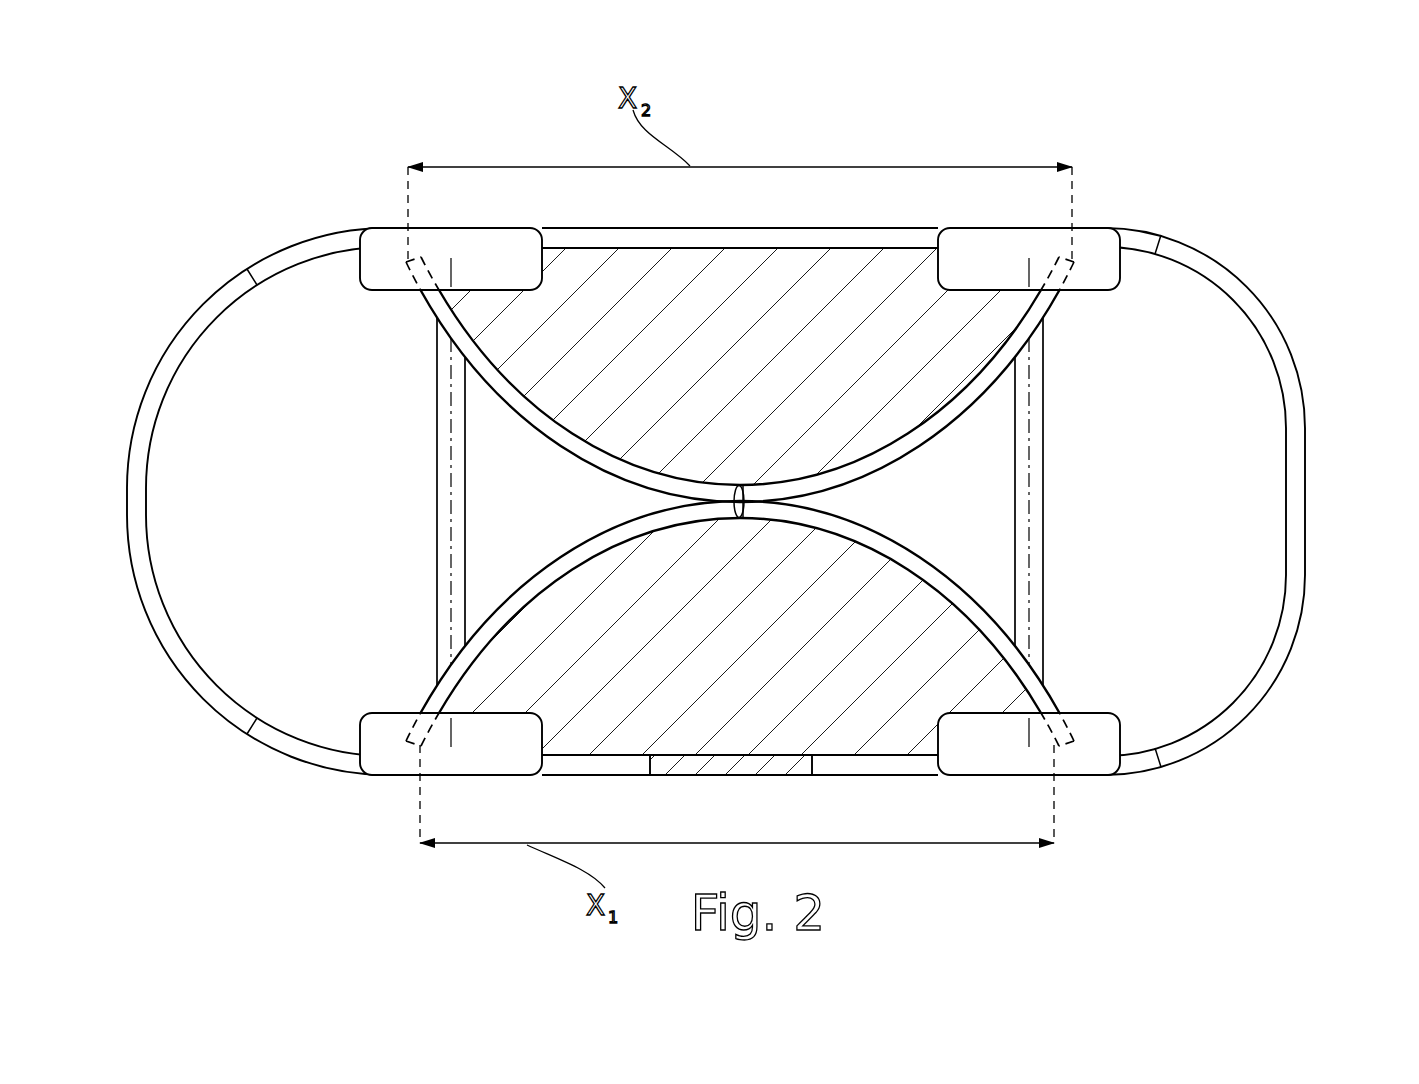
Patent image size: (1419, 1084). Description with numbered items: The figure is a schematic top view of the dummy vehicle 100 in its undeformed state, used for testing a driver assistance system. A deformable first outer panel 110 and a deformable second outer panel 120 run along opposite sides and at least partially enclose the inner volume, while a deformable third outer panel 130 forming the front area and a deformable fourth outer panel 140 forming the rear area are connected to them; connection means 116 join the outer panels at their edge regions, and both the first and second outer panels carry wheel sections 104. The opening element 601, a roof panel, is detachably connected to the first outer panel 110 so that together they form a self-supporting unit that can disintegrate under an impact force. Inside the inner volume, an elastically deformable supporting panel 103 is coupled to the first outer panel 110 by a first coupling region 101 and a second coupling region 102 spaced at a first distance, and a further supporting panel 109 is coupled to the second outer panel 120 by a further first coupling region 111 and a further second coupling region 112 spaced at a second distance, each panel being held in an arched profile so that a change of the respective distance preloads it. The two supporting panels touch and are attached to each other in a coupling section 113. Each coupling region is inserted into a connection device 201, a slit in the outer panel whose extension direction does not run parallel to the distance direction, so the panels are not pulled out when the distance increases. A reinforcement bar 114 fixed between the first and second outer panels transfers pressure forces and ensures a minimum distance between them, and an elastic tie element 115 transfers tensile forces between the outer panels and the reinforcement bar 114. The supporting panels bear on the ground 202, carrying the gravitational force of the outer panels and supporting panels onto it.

The dummy vehicle 100 is at (1194, 125).
The first coupling region 101 is at (406, 720).
The second coupling region 102 is at (1078, 722).
The supporting panel 103 is at (657, 623).
The wheel section 104 is at (464, 267).
The further supporting panel 109 is at (632, 342).
The first outer panel 110 is at (846, 762).
The further first coupling region 111 is at (400, 278).
The further second coupling region 112 is at (1080, 260).
The coupling section 113 is at (742, 485).
The reinforcement bar 114 is at (437, 500).
The tie element 115 is at (451, 456).
The connection means 116 is at (252, 268).
The second outer panel 120 is at (778, 247).
The third outer panel 130 is at (1292, 372).
The fourth outer panel 140 is at (170, 365).
The connection device 201 is at (404, 258).
The ground 202 is at (232, 505).
The opening element 601 is at (697, 765).